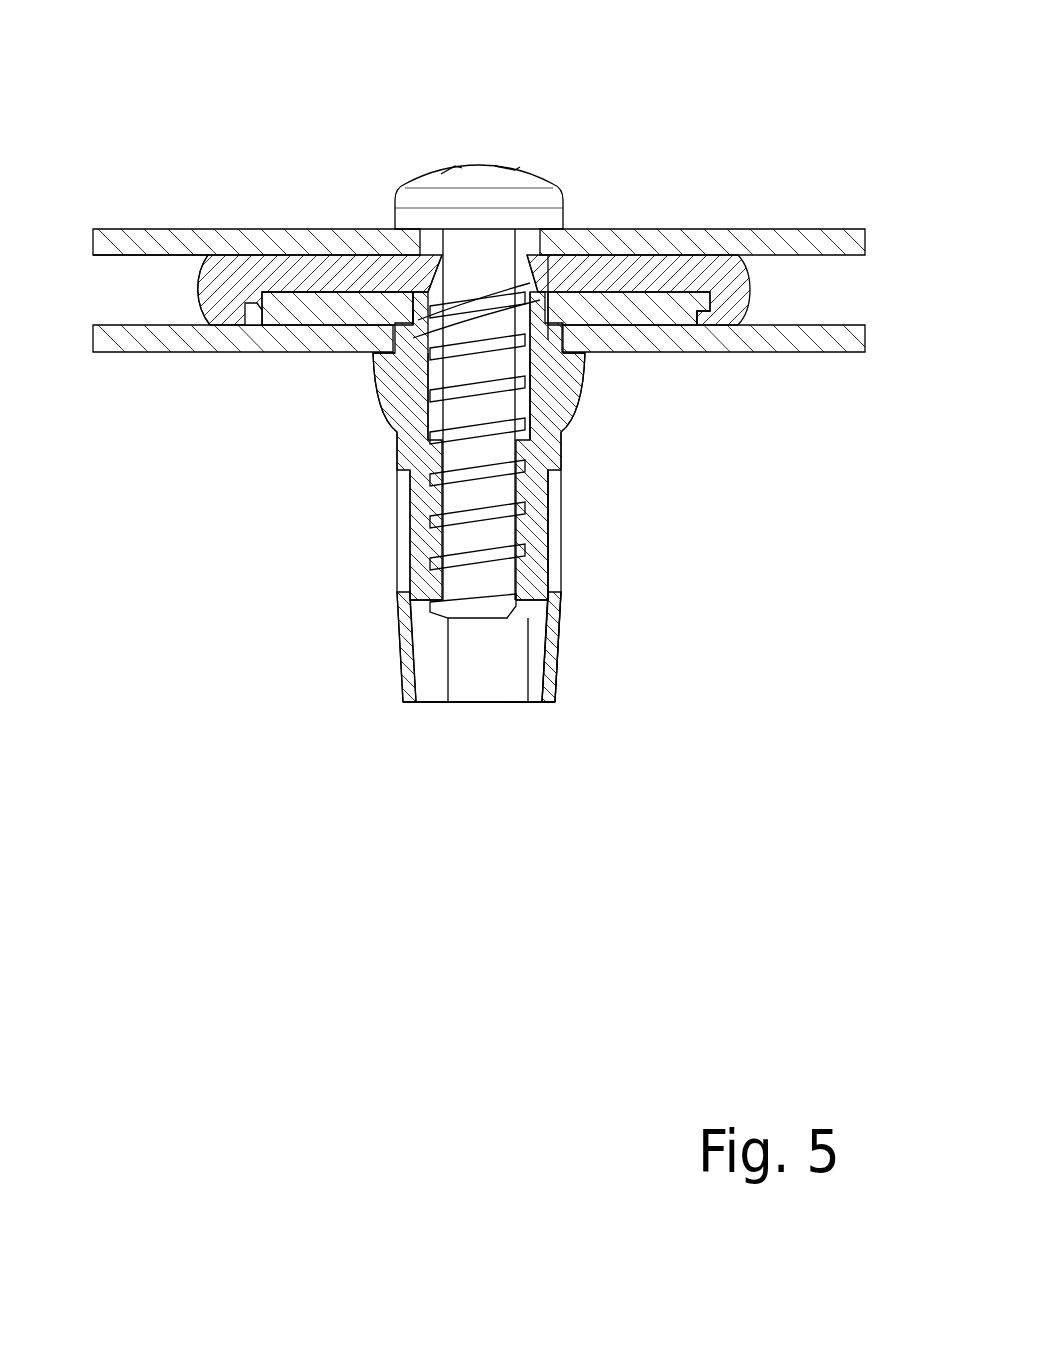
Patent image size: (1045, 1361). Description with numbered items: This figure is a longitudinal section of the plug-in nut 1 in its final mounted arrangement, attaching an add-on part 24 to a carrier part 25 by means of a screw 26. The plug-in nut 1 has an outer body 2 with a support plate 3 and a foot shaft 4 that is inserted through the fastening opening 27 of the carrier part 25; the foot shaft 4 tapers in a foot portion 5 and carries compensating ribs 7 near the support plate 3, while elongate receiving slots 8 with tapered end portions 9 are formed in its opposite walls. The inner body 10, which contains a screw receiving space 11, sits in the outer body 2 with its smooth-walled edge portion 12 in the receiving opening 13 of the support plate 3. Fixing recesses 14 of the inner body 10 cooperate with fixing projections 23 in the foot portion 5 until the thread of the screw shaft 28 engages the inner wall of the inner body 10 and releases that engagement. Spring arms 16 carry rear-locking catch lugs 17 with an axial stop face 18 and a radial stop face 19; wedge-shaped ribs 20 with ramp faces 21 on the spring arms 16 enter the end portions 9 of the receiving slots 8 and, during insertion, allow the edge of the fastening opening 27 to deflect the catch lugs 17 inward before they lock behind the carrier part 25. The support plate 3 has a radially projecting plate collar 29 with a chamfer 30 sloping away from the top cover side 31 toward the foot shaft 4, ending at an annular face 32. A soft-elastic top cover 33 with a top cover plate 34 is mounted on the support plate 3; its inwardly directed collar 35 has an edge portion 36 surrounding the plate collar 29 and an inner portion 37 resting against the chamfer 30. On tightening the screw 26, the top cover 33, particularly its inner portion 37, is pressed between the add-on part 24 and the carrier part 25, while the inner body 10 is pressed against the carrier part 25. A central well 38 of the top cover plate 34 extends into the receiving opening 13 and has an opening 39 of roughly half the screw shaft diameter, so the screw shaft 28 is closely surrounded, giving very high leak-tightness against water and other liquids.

The plug-in nut 1 is at (366, 723).
The outer body 2 is at (384, 660).
The support plate 3 is at (558, 300).
The foot shaft 4 is at (543, 662).
The foot portion 5 is at (548, 706).
The compensating ribs 7 is at (567, 438).
The receiving slots 8 is at (405, 486).
The end portions 9 is at (412, 567).
The inner body 10 is at (421, 616).
The screw receiving space 11 is at (553, 551).
The edge portion 12 is at (555, 680).
The receiving opening 13 is at (438, 257).
The fixing recesses 14 is at (417, 615).
The spring arms 16 is at (405, 550).
The rear-locking catch lugs 17 is at (388, 378).
The axial stop face 18 is at (392, 352).
The radial stop face 19 is at (555, 335).
The wedge-shaped ribs 20 is at (405, 430).
The ramp face 21 is at (403, 443).
The fixing projections 23 is at (413, 672).
The add-on part 24 is at (826, 244).
The carrier part 25 is at (850, 346).
The screw 26 is at (483, 205).
The fastening opening 27 is at (661, 274).
The screw shaft 28 is at (477, 592).
The plate collar 29 is at (706, 312).
The chamfer 30 is at (703, 320).
The top cover side 31 is at (297, 287).
The annular face 32 is at (728, 256).
The top cover 33 is at (556, 336).
The top cover plate 34 is at (280, 273).
The collar 35 is at (186, 276).
The edge portion 36 is at (213, 293).
The inner portion 37 is at (253, 320).
The well 38 is at (415, 303).
The opening 39 is at (489, 308).